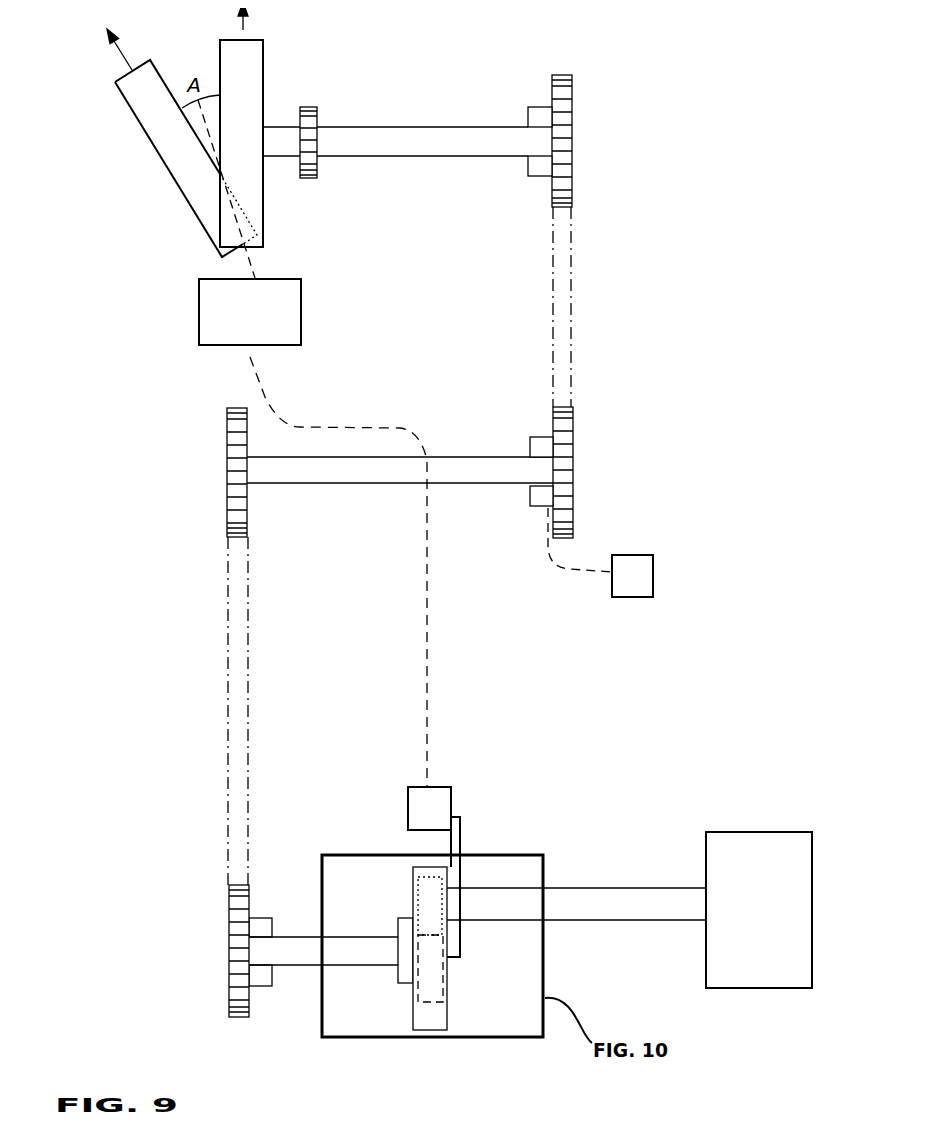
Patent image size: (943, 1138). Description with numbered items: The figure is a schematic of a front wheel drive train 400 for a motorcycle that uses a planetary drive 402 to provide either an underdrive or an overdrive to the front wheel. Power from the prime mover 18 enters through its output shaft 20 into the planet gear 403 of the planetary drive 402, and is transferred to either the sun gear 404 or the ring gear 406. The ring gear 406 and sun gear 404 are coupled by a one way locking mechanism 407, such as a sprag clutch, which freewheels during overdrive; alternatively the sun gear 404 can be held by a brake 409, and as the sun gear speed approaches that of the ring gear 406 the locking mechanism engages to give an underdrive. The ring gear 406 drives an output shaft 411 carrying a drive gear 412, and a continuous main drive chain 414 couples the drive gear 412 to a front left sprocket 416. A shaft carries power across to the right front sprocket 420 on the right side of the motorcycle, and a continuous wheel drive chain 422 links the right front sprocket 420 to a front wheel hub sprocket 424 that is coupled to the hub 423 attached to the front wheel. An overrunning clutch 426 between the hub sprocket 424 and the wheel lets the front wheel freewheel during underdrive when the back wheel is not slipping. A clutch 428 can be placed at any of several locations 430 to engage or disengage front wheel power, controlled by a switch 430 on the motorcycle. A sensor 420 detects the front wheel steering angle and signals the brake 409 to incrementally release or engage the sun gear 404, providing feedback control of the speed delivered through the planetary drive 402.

The prime mover 18 is at (753, 832).
The output shaft 20 is at (625, 890).
The front wheel drive train 400 is at (122, 790).
The planetary drive 402 is at (508, 1072).
The planet gear 403 is at (418, 895).
The sun gear 404 is at (418, 1000).
The ring gear 406 is at (418, 867).
The one way locking mechanism 407 is at (398, 978).
The brake 409 is at (451, 805).
The output shaft 411 is at (288, 968).
The drive gear 412 is at (229, 925).
The continuous main drive chain 414 is at (228, 624).
The front left sprocket 416 is at (227, 487).
The right front sprocket 420 is at (200, 347).
The continuous wheel drive chain 422 is at (572, 258).
The hub 423 is at (460, 127).
The front wheel hub sprocket 424 is at (572, 117).
The overrunning clutch 426 is at (305, 107).
The clutch 428 is at (538, 176).
The location 430 is at (540, 107).